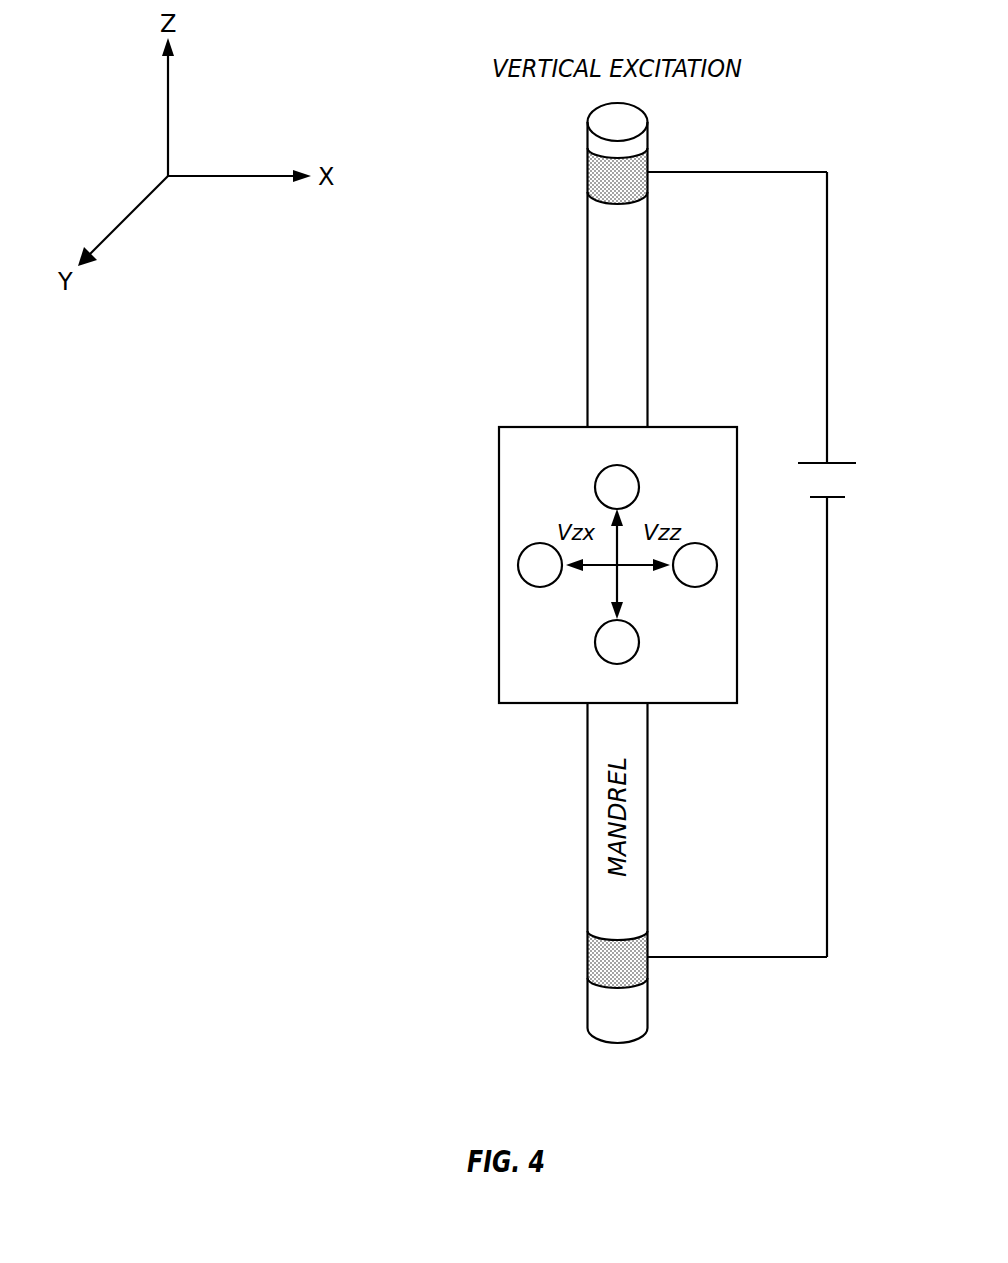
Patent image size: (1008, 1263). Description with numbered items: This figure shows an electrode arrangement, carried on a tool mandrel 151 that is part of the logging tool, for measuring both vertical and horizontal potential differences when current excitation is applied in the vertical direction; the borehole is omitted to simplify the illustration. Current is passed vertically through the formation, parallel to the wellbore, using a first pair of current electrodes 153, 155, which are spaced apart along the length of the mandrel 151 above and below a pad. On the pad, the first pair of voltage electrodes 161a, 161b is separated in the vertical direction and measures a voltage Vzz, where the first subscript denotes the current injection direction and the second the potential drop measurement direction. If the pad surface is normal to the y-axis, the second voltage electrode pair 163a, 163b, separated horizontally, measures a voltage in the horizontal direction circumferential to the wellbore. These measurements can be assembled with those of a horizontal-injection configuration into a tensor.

The tool mandrel 151 is at (648, 122).
The current electrode 153 is at (648, 158).
The current electrode 155 is at (648, 968).
The voltage electrode 161a is at (640, 487).
The voltage electrode 161b is at (640, 642).
The voltage electrode 163a is at (716, 565).
The voltage electrode 163b is at (518, 565).